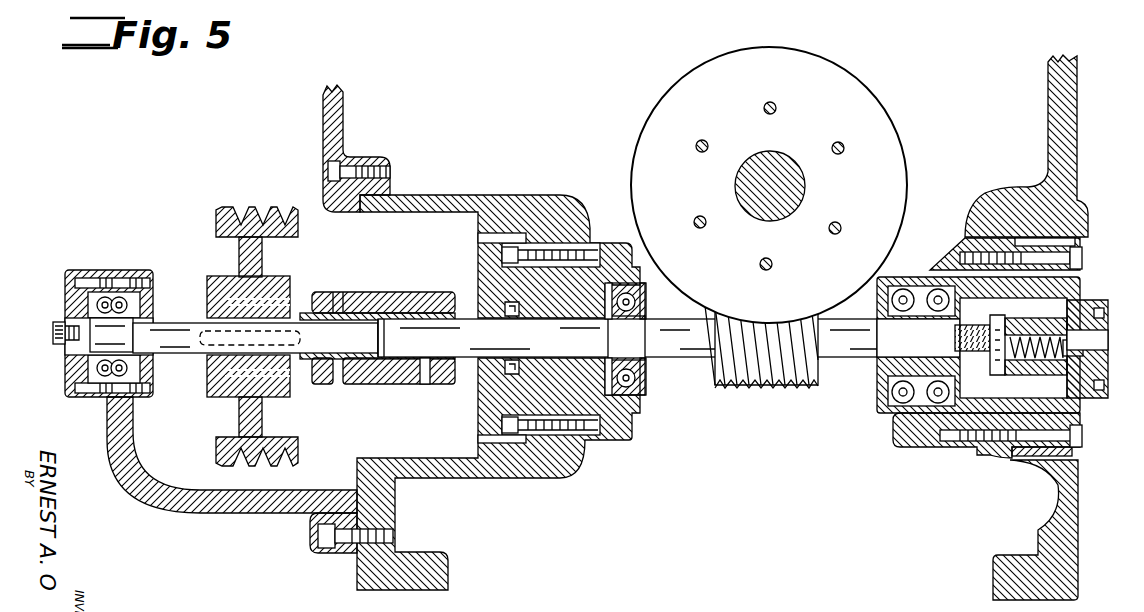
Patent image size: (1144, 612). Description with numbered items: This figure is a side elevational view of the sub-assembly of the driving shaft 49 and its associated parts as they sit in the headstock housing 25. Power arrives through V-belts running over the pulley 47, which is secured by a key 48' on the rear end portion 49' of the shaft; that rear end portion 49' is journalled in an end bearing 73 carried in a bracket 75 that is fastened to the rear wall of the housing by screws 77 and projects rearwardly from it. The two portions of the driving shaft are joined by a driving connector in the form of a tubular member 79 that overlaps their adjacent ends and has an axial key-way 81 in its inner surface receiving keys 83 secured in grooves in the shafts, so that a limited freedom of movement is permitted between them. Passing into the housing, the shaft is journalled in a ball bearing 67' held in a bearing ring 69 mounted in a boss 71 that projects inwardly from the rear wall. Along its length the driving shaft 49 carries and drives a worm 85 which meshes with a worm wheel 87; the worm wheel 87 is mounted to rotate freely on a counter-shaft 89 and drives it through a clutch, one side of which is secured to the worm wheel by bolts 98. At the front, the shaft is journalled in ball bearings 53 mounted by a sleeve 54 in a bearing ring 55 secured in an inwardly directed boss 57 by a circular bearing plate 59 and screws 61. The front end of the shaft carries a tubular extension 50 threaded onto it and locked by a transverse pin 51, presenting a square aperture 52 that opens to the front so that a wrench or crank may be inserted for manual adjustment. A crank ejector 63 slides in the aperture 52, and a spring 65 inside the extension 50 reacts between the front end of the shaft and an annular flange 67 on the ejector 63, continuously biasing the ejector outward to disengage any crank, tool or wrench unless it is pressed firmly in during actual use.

The headstock housing 25 is at (323, 124).
The pulley 47 is at (252, 208).
The key 48' is at (225, 378).
The driving shaft 49 is at (555, 366).
The rear end portion 49' is at (172, 284).
The tubular extension 50 is at (962, 372).
The pin 51 is at (995, 316).
The square aperture 52 is at (1100, 356).
The ball bearings 53 is at (932, 447).
The sleeve 54 is at (1060, 292).
The bearing ring 55 is at (878, 410).
The inwardly directed boss 57 is at (925, 240).
The circular bearing plate 59 is at (1080, 254).
The screws 61 is at (1083, 258).
The crank ejector 63 is at (1075, 348).
The spring 65 is at (1033, 336).
The annular flange 67 is at (1036, 360).
The ball bearing 67' is at (650, 356).
The bearing ring 69 is at (625, 413).
The boss 71 is at (522, 195).
The end bearing 73 is at (66, 306).
The bracket 75 is at (107, 420).
The screws 77 is at (318, 535).
The tubular member 79 is at (346, 298).
The key-way 81 is at (466, 300).
The keys 83 is at (410, 268).
The worm 85 is at (750, 388).
The worm wheel 87 is at (662, 124).
The counter-shaft 89 is at (744, 179).
The bolts 98 is at (844, 153).